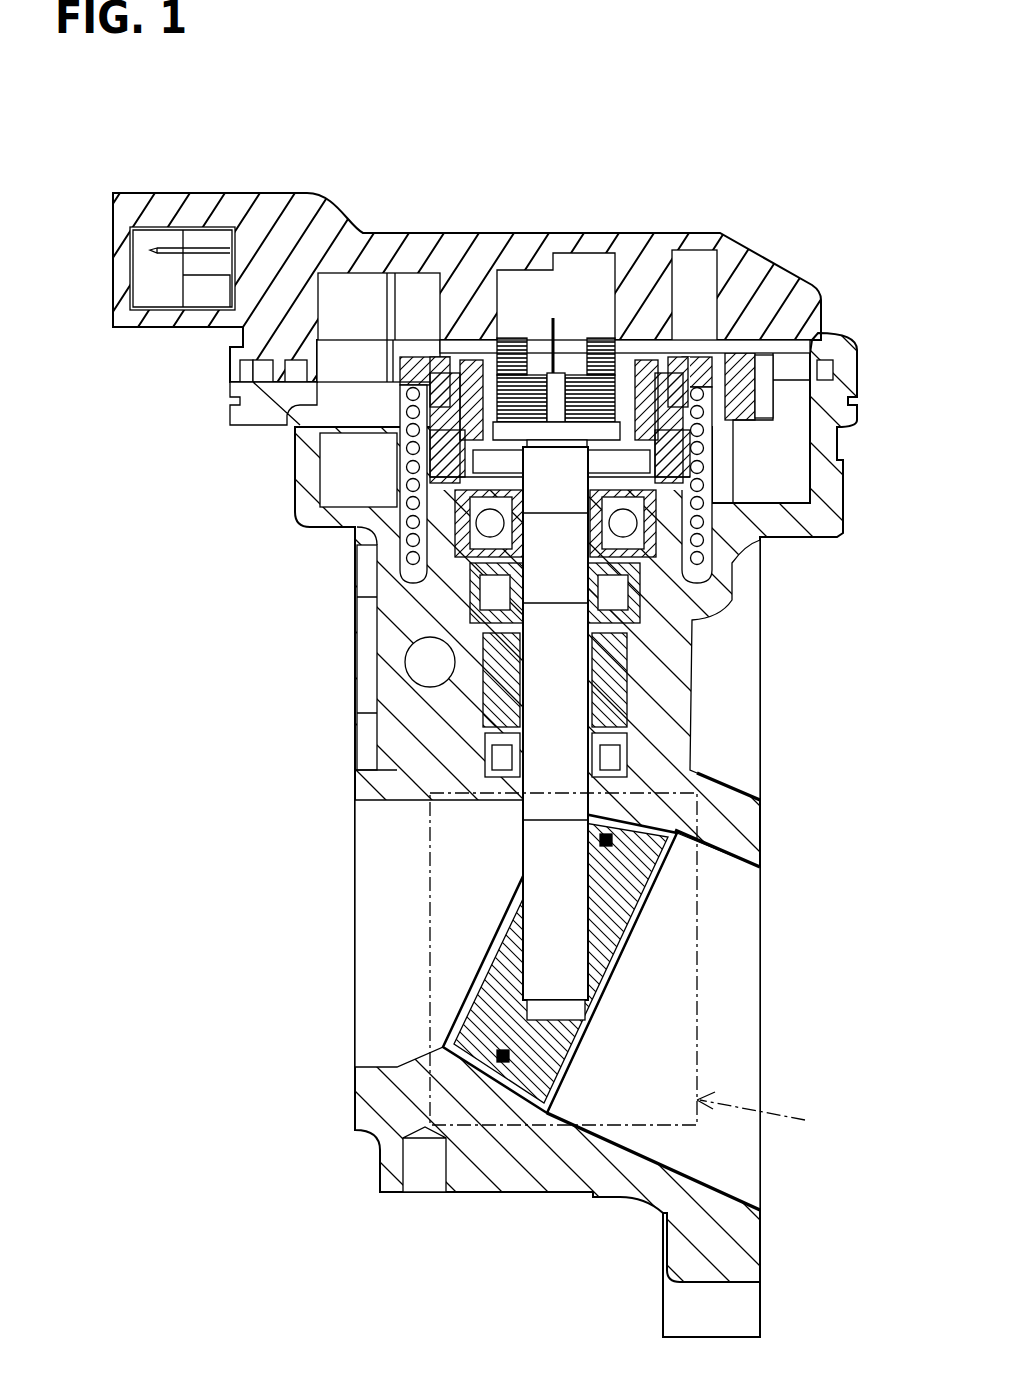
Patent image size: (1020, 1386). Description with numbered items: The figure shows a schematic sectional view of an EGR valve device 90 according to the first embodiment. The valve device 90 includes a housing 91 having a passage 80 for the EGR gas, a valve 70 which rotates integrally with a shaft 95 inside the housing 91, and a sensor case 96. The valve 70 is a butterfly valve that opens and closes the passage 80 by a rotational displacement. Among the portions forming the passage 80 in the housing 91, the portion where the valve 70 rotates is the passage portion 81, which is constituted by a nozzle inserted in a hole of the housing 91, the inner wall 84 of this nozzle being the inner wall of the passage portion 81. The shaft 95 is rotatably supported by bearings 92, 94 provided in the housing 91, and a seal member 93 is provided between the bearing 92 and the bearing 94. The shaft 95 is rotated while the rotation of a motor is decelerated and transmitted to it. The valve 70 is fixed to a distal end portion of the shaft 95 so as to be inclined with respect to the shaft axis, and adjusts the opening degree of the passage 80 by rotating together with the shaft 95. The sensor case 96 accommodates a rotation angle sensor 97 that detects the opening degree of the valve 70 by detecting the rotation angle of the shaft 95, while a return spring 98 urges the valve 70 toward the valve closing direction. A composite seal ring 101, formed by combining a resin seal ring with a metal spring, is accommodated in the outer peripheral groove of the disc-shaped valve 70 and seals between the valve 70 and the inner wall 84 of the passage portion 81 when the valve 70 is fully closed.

The valve device 90 is at (492, 706).
The housing 91 is at (657, 652).
The bearing 92 is at (417, 540).
The seal member 93 is at (473, 590).
The bearing 94 is at (493, 703).
The shaft 95 is at (553, 848).
The sensor case 96 is at (763, 268).
The rotation angle sensor 97 is at (578, 327).
The return spring 98 is at (415, 412).
The composite seal ring 101 is at (633, 797).
The passage portion 81 is at (665, 797).
The inner wall 84 is at (650, 898).
The passage 80 is at (670, 1013).
The valve 70 is at (503, 982).